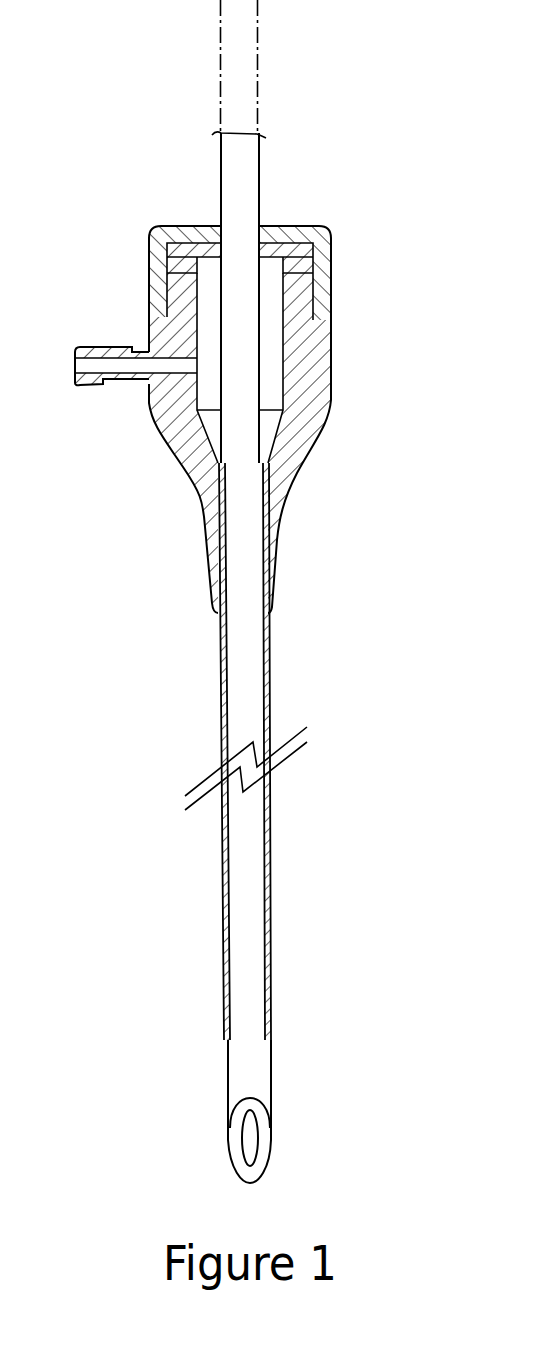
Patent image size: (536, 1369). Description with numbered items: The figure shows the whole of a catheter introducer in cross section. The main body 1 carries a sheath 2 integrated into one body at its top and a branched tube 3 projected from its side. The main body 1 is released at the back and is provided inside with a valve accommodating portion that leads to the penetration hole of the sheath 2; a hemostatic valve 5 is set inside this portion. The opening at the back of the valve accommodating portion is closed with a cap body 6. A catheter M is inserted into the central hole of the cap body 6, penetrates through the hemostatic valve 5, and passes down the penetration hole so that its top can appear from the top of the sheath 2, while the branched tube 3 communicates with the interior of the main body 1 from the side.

The catheter M is at (248, 163).
The main body 1 is at (313, 372).
The sheath 2 is at (270, 673).
The branched tube 3 is at (122, 379).
The hemostatic valve 5 is at (290, 226).
The cap body 6 is at (167, 226).